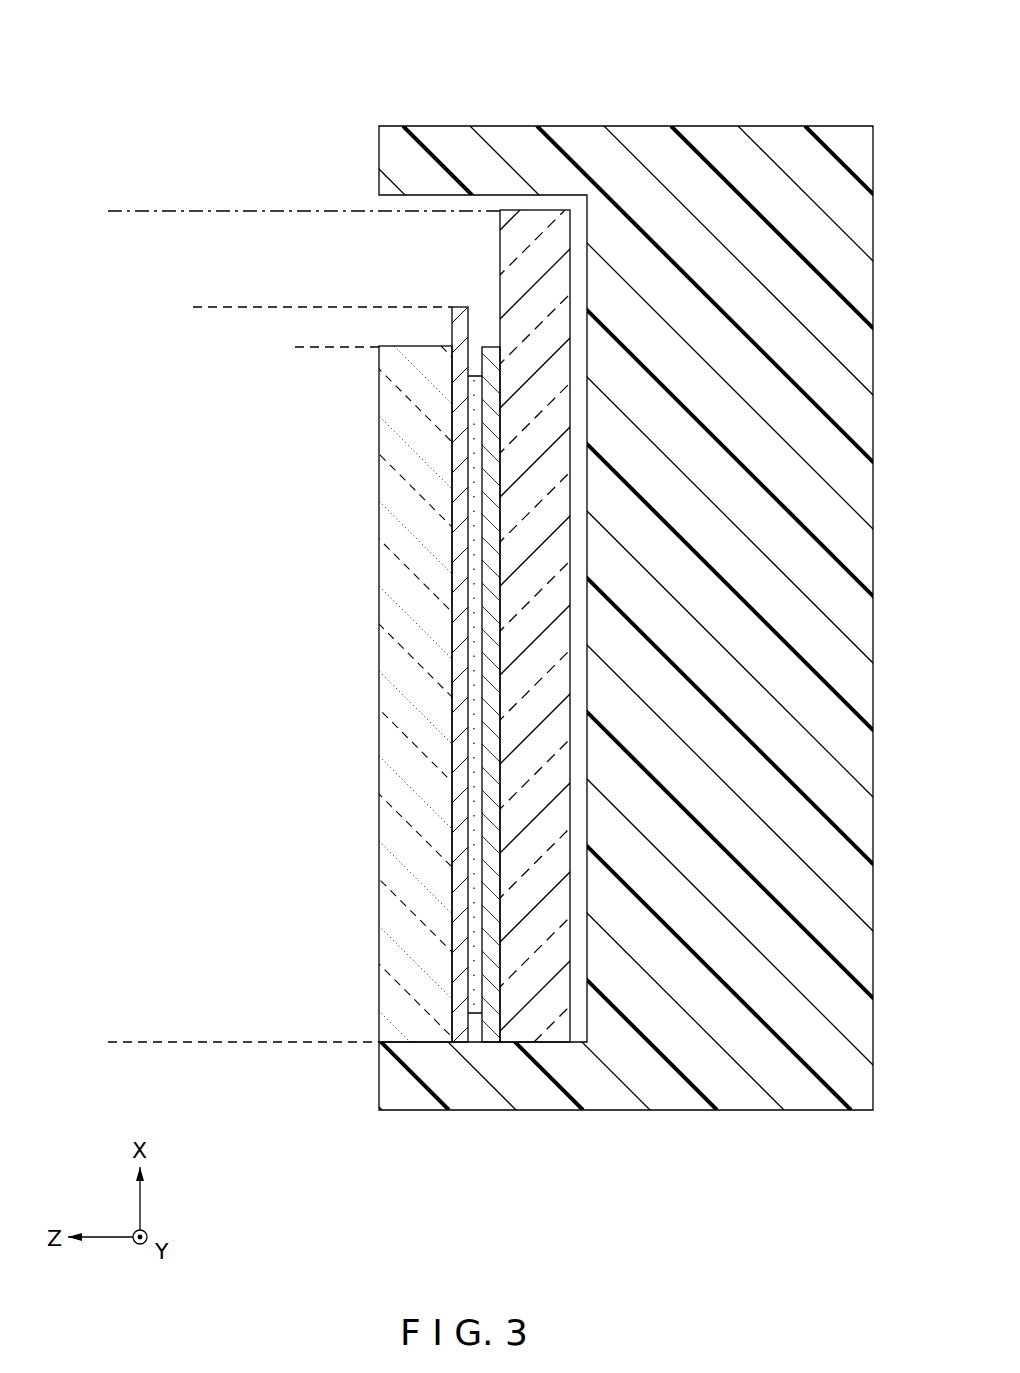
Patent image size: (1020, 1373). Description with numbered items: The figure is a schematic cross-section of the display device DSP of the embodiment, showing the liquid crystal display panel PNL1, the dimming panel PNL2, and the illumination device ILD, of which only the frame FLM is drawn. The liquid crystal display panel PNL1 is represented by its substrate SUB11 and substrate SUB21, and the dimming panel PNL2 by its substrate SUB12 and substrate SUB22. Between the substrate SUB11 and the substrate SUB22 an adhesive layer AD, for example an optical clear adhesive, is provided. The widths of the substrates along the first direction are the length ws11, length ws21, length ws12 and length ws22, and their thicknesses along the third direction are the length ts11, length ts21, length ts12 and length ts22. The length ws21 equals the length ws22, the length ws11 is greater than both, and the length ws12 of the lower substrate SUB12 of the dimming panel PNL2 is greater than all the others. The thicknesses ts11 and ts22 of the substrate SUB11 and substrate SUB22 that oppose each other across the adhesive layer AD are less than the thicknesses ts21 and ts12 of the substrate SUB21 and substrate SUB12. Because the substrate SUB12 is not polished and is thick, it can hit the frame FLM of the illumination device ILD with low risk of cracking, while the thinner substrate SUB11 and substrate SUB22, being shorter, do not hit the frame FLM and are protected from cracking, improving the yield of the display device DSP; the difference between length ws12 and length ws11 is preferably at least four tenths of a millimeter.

The display device DSP is at (243, 72).
The illumination device ILD is at (510, 591).
The frame FLM is at (433, 150).
The adhesive layer AD is at (476, 376).
The liquid crystal display panel PNL1 is at (510, 773).
The dimming panel PNL2 is at (510, 725).
The substrate SUB11 is at (460, 1035).
The substrate SUB21 is at (415, 1027).
The substrate SUB12 is at (540, 1030).
The substrate SUB22 is at (490, 1032).
The length ws12 is at (123, 211).
The length ws11 is at (210, 307).
The length ws21 is at (315, 1042).
The length ws22 is at (315, 347).
The length ts12 is at (620, 500).
The length ts22 is at (550, 626).
The length ts11 is at (520, 754).
The length ts21 is at (505, 903).